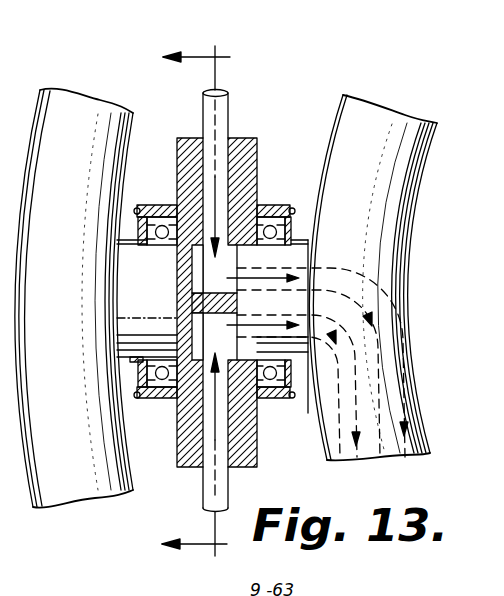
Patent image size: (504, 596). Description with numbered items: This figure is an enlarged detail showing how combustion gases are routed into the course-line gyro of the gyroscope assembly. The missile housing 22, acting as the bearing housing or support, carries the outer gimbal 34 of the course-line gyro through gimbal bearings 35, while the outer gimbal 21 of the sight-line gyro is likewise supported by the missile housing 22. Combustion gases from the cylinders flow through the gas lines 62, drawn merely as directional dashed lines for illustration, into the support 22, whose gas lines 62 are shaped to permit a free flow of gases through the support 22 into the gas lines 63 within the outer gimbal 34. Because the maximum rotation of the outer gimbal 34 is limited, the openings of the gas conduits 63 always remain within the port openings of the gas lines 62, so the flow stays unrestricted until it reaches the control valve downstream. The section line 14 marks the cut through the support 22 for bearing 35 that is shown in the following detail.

The section line 14 is at (213, 314).
The outer gimbal 21 is at (65, 493).
The missile housing 22 is at (190, 138).
The outer gimbal 34 is at (380, 187).
The gimbal bearings 35 is at (303, 373).
The gas lines 62 is at (222, 108).
The gas lines 63 is at (353, 362).